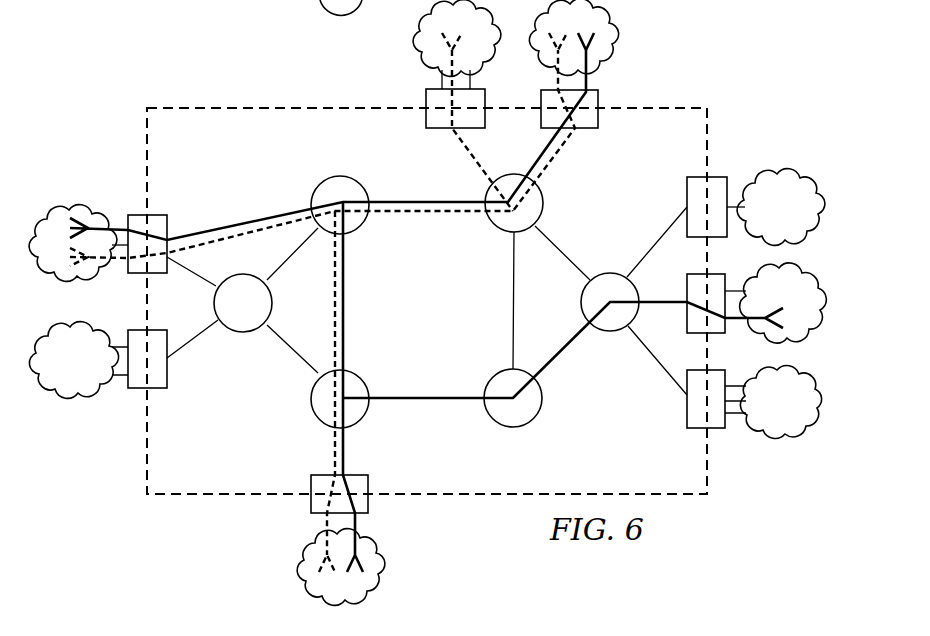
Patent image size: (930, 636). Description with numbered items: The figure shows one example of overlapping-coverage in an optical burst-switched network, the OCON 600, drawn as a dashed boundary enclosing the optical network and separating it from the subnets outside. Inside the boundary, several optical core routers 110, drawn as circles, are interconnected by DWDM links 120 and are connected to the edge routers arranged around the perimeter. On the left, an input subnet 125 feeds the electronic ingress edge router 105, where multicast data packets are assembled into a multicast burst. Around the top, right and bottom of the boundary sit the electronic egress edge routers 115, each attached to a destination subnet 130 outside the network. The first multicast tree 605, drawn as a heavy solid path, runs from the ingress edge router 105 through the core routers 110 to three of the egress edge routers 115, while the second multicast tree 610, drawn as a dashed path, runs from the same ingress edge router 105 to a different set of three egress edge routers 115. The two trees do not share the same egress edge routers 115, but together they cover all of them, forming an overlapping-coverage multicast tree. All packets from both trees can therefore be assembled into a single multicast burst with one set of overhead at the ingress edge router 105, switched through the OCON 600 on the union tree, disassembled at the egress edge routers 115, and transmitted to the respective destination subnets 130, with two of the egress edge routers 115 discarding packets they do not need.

The overlapping-coverage optical burst-switched network (OCON) 600 is at (146, 538).
The optical core router 110 is at (610, 332).
The DWDM link 120 is at (568, 258).
The electronic ingress edge router 105 is at (140, 215).
The electronic egress edge router 115 is at (600, 100).
The input subnet 125 is at (72, 212).
The destination subnet 130 is at (418, 47).
The first multicast tree T1 605 is at (257, 213).
The second multicast tree T2 610 is at (425, 215).